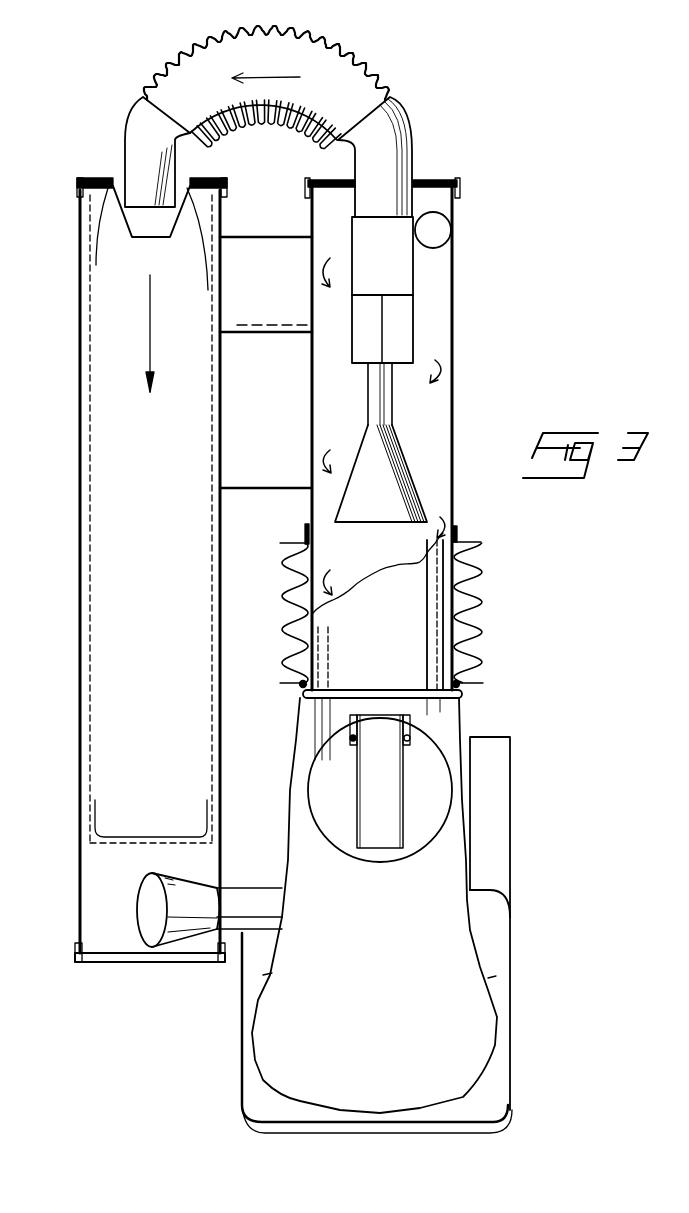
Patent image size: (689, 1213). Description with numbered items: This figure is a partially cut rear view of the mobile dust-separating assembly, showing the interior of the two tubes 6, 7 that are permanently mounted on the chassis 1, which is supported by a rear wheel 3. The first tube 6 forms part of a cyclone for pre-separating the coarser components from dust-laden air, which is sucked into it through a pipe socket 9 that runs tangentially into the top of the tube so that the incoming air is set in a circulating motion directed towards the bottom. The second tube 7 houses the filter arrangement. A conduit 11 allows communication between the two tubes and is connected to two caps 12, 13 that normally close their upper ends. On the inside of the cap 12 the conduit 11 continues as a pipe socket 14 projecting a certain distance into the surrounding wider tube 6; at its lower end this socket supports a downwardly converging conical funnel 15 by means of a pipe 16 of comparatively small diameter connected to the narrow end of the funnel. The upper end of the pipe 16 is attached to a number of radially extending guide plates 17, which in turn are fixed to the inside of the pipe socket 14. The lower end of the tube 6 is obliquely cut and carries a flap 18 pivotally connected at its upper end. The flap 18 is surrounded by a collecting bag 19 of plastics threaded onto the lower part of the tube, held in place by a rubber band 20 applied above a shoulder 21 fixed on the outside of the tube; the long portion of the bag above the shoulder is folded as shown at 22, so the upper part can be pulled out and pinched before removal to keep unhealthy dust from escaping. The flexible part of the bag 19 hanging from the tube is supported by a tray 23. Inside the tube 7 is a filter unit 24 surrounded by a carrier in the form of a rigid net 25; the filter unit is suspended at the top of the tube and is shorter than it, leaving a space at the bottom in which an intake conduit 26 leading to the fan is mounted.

The chassis 1 is at (268, 235).
The rear wheel 3 is at (507, 807).
The tube 6 is at (455, 410).
The tube 7 is at (80, 393).
The pipe socket 9 is at (447, 216).
The conduit 11 is at (327, 67).
The cap 12 is at (437, 182).
The cap 13 is at (110, 182).
The pipe socket 14 is at (415, 268).
The conical funnel 15 is at (412, 470).
The pipe 16 is at (380, 397).
The guide plates 17 is at (380, 338).
The flap 18 is at (347, 855).
The collecting bag 19 is at (288, 840).
The rubber band 20 is at (303, 684).
The shoulder 21 is at (375, 692).
The folded bag portion 22 is at (483, 592).
The tray 23 is at (505, 1092).
The filter unit 24 is at (92, 483).
The rigid net 25 is at (92, 512).
The intake conduit 26 is at (183, 928).